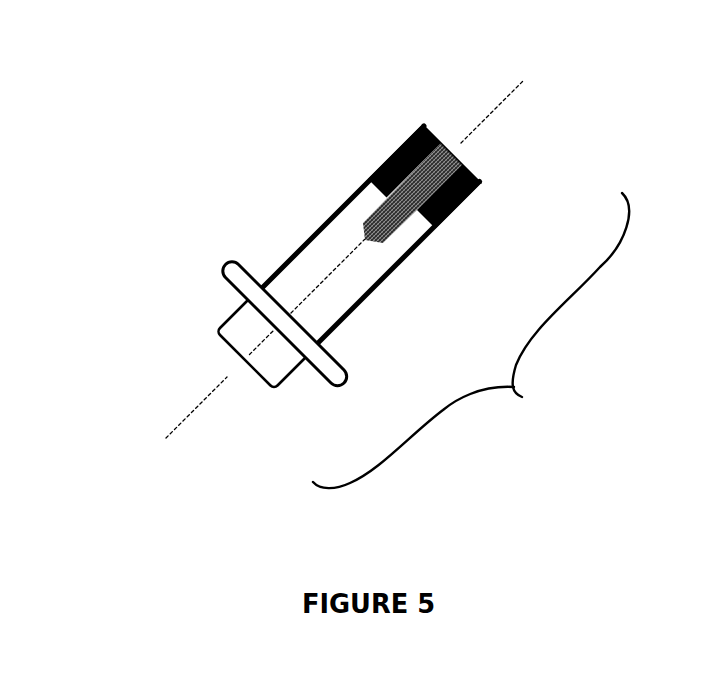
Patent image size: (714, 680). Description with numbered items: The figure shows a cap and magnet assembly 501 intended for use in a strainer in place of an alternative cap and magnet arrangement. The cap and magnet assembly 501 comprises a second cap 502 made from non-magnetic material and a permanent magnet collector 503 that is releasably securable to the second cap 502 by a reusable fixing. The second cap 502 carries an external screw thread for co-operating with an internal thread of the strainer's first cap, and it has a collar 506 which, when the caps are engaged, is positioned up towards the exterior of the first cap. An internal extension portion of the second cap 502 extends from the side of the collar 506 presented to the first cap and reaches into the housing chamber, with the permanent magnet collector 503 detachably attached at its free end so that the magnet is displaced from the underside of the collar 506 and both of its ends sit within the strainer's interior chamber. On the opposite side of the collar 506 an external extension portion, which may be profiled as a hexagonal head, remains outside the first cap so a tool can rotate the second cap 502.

The cap and magnet assembly 501 is at (471, 340).
The second cap 502 is at (176, 280).
The permanent magnet collector 503 is at (390, 156).
The collar 506 is at (230, 271).